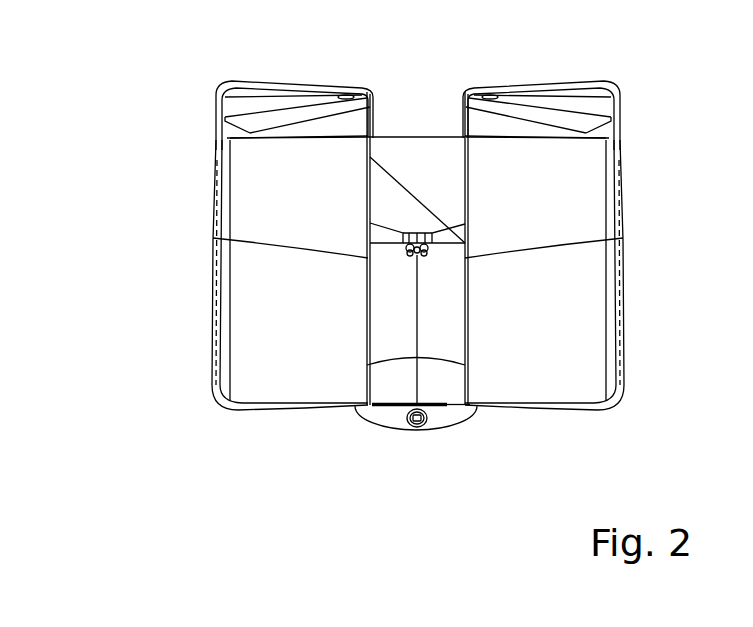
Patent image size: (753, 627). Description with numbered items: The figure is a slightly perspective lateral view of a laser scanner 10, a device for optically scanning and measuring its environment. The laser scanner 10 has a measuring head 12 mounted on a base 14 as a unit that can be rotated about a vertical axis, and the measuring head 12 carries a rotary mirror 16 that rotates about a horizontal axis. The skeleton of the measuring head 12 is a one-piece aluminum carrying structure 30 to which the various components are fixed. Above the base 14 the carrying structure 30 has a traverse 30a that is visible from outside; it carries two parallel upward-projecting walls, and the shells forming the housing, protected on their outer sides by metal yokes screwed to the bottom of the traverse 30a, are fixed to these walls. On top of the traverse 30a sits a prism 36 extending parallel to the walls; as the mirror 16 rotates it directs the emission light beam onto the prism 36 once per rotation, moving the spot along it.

The laser scanner 10 is at (170, 80).
The measuring head 12 is at (214, 354).
The base 14 is at (457, 421).
The rotary mirror 16 is at (423, 150).
The carrying structure 30 is at (381, 408).
The traverse 30a is at (409, 340).
The prism 36 is at (418, 240).